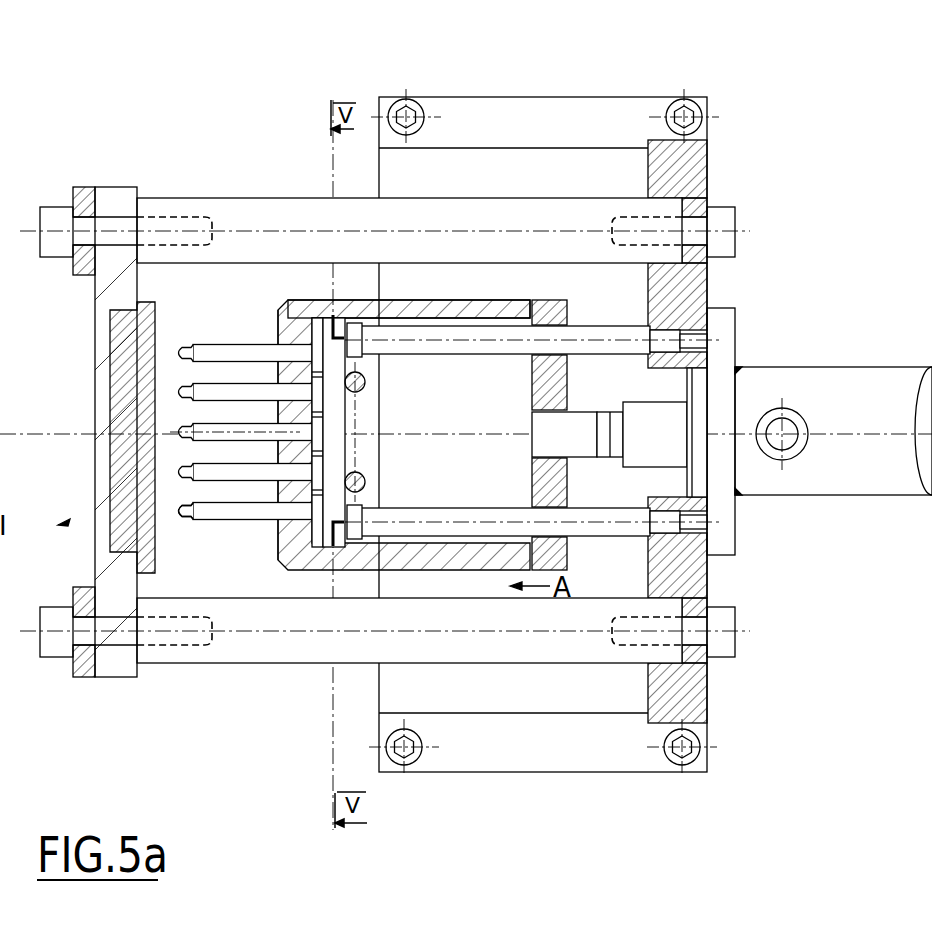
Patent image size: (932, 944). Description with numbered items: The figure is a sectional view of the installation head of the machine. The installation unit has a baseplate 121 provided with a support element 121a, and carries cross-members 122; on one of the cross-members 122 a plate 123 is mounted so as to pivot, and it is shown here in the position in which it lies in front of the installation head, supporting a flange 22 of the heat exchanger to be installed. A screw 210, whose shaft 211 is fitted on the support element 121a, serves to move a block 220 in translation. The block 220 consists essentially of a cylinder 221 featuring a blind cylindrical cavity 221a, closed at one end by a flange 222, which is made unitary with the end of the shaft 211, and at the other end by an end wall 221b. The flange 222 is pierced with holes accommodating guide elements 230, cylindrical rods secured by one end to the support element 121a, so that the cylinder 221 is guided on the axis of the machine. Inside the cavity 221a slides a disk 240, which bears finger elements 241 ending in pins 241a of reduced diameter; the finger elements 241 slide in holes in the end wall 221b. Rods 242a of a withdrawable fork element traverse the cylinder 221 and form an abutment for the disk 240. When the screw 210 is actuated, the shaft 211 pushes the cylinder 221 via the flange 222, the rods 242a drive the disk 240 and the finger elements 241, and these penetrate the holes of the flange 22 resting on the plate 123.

The baseplate 121 is at (486, 165).
The support element 121a is at (698, 173).
The cross-member 122 is at (257, 197).
The support plate 123 is at (95, 347).
The flange 22 is at (158, 560).
The block 220 is at (258, 302).
The cylinder 221 is at (456, 300).
The blind cylindrical cavity 221a is at (502, 435).
The end wall 221b is at (278, 340).
The flange 222 is at (518, 396).
The guide element 230 is at (663, 433).
The disk 240 is at (336, 447).
The finger element 241 is at (235, 430).
The pin 241a is at (178, 521).
The rod 242a is at (366, 388).
The shaft 211 is at (619, 436).
The screw 210 is at (833, 458).